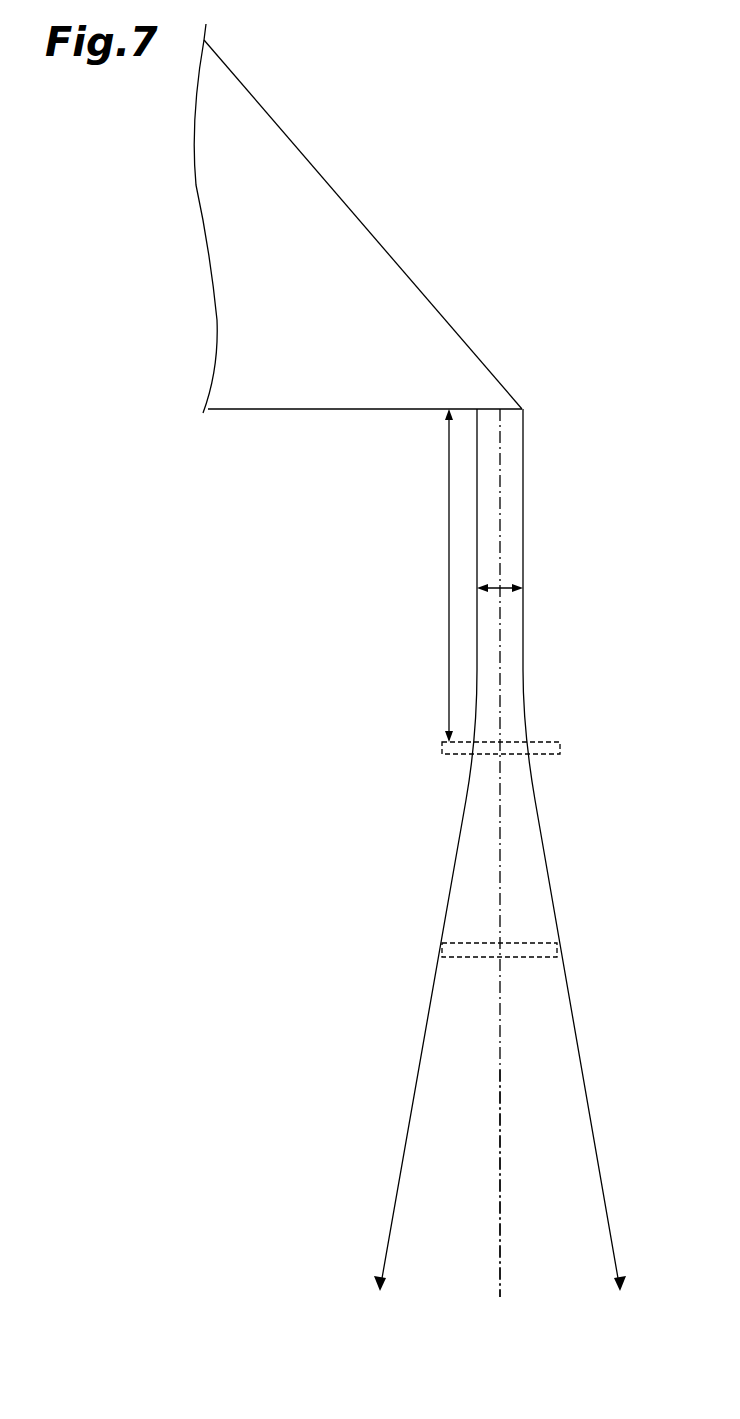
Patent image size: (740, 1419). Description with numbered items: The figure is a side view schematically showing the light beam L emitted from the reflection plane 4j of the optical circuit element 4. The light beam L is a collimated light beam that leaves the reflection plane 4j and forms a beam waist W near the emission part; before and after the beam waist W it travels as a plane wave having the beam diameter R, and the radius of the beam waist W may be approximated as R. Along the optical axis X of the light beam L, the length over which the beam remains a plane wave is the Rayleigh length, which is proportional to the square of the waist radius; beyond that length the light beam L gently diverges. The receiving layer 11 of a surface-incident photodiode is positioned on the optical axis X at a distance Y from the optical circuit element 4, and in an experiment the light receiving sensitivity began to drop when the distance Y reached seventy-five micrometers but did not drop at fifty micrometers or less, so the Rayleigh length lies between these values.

The optical circuit element 4 is at (252, 140).
The reflection plane 4j is at (307, 162).
The light beam L is at (500, 497).
The beam waist W is at (523, 675).
The distance Y is at (436, 575).
The beam diameter R is at (500, 574).
The receiving layer 11 is at (560, 748).
The optical axis X is at (500, 1070).